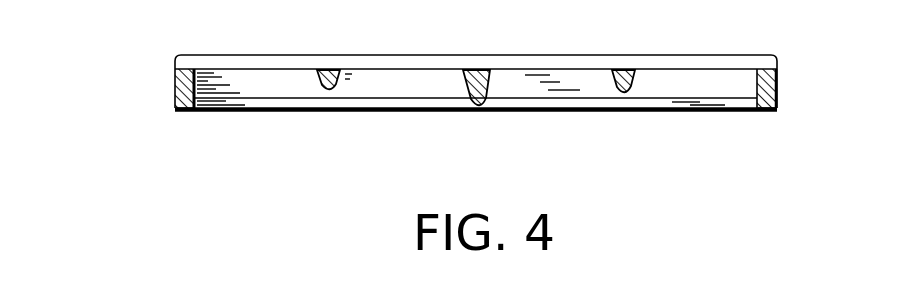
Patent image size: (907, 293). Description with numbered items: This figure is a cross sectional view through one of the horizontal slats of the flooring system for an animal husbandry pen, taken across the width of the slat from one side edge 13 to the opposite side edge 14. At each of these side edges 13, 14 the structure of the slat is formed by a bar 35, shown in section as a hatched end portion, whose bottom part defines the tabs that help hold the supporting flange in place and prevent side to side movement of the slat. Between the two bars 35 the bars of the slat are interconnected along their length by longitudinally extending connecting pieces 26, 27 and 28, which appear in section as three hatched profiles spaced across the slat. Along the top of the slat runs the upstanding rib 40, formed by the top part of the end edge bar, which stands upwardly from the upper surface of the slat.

The side edge 13 is at (166, 78).
The side edge 14 is at (786, 87).
The connecting piece 26 is at (624, 68).
The connecting piece 27 is at (478, 68).
The connecting piece 28 is at (331, 68).
The bar 35 is at (185, 112).
The upstanding rib 40 is at (260, 57).